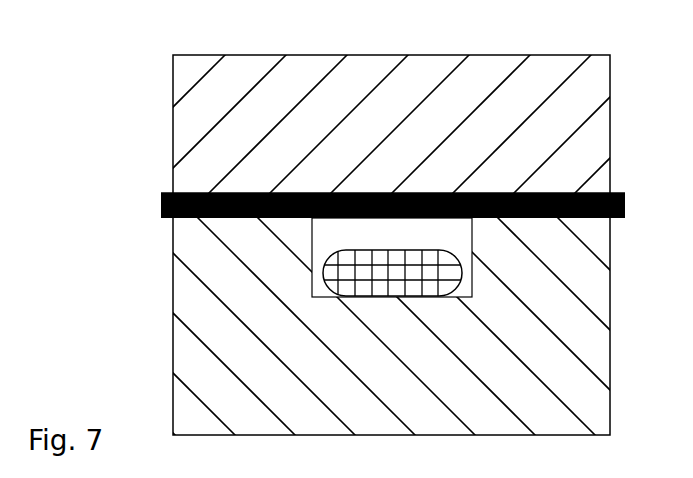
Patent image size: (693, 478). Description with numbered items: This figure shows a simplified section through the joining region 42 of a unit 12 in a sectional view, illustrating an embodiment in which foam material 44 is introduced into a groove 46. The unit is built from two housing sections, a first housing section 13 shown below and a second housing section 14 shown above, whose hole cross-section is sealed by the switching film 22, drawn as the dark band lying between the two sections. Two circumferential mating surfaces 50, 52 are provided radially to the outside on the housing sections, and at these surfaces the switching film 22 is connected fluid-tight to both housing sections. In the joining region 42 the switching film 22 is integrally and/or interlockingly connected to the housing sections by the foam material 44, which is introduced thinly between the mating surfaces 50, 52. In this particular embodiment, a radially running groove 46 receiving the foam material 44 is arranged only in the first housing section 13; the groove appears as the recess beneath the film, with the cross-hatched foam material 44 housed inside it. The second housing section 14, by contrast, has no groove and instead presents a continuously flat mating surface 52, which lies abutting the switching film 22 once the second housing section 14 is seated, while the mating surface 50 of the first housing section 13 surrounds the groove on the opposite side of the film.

The housing 12 is at (346, 245).
The first housing section 13 is at (198, 317).
The second housing section 14 is at (193, 149).
The switching film 22 is at (615, 192).
The joining region 42 is at (405, 223).
The foam material 44 is at (443, 270).
The groove 46 is at (323, 297).
The mating surface 50 is at (410, 296).
The mating surface 52 is at (443, 192).